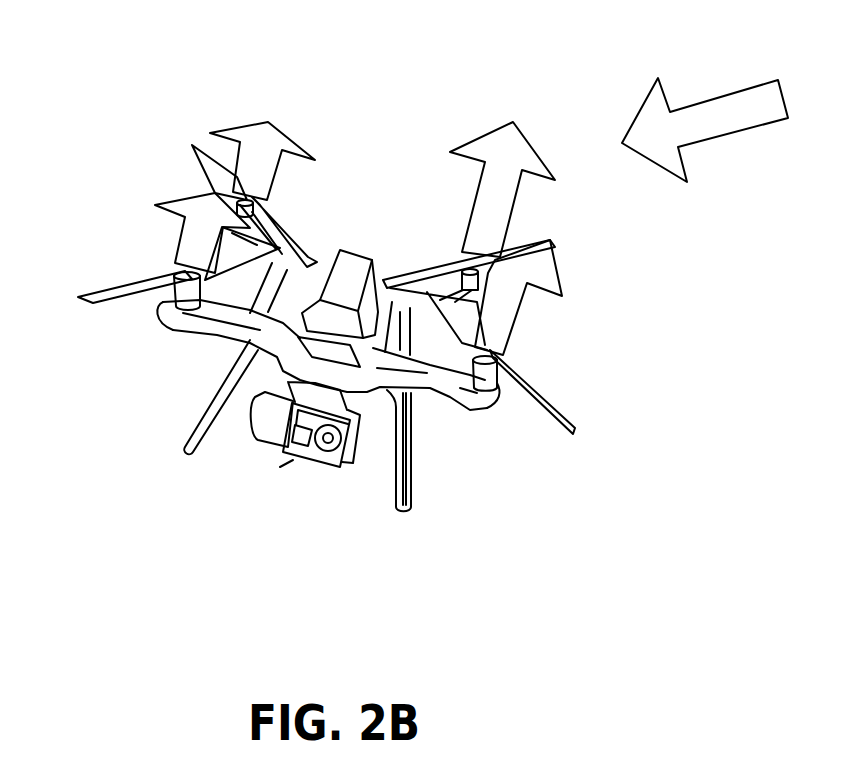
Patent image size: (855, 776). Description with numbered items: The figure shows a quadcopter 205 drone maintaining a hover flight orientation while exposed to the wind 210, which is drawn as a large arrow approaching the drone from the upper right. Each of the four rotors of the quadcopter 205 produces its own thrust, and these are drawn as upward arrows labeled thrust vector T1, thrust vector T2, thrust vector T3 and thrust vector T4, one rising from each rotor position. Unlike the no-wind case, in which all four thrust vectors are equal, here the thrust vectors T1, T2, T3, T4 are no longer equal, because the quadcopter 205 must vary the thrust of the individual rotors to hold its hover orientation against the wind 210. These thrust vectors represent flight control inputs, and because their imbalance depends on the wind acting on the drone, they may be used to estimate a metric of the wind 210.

The quadcopter 205 is at (102, 288).
The wind 210 is at (660, 79).
The thrust vector T1 is at (262, 161).
The thrust vector T2 is at (502, 189).
The thrust vector T3 is at (518, 297).
The thrust vector T4 is at (202, 233).